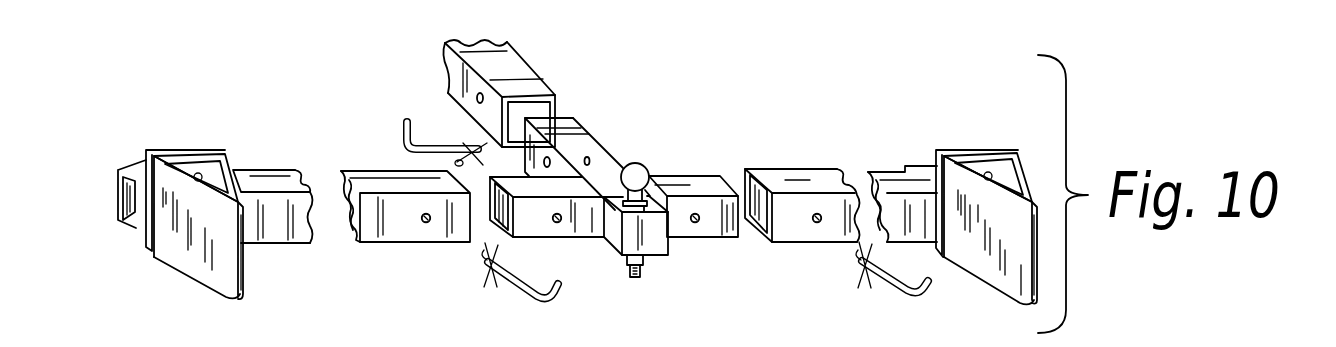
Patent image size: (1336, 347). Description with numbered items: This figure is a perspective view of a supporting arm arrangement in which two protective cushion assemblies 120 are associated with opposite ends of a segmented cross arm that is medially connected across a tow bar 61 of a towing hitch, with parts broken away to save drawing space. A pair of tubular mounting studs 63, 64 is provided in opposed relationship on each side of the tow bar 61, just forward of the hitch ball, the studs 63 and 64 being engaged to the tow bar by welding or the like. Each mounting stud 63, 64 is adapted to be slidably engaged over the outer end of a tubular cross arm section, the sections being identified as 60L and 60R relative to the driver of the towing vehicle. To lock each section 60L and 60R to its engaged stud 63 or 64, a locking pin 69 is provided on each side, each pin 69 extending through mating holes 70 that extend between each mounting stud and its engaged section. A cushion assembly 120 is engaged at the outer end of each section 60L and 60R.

The tow bar 61 is at (575, 140).
The tubular mounting stud 63 is at (596, 228).
The tubular mounting stud 64 is at (702, 228).
The tubular cross arm section 60L is at (410, 232).
The tubular cross arm section 60R is at (830, 228).
The locking pin 69 is at (518, 293).
The mating holes 70 is at (427, 223).
The cushion assembly 120 is at (184, 279).